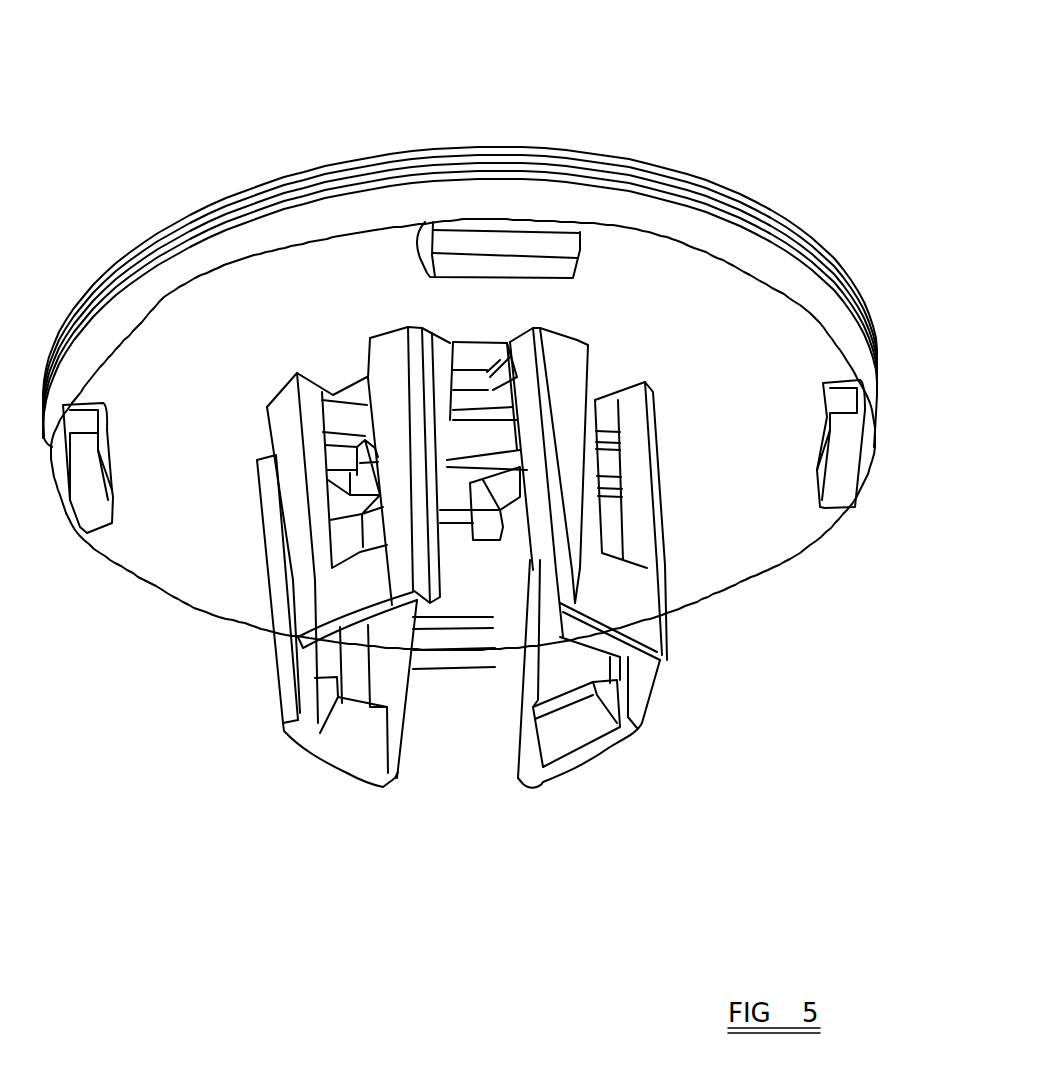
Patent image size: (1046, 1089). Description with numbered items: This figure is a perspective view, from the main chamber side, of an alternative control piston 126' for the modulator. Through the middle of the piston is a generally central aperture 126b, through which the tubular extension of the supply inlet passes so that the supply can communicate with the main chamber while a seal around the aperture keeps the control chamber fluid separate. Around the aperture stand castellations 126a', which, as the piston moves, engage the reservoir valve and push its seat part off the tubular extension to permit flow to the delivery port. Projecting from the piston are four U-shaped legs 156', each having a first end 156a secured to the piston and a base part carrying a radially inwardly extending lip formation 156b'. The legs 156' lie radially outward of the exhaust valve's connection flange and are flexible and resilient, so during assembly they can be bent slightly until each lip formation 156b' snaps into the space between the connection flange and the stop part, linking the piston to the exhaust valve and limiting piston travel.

The control piston 126' is at (460, 326).
The central aperture 126b is at (495, 437).
The castellations 126a' is at (502, 676).
The first end 156a is at (277, 584).
The lip formation 156b' is at (354, 748).
The U-shaped legs 156' is at (665, 558).